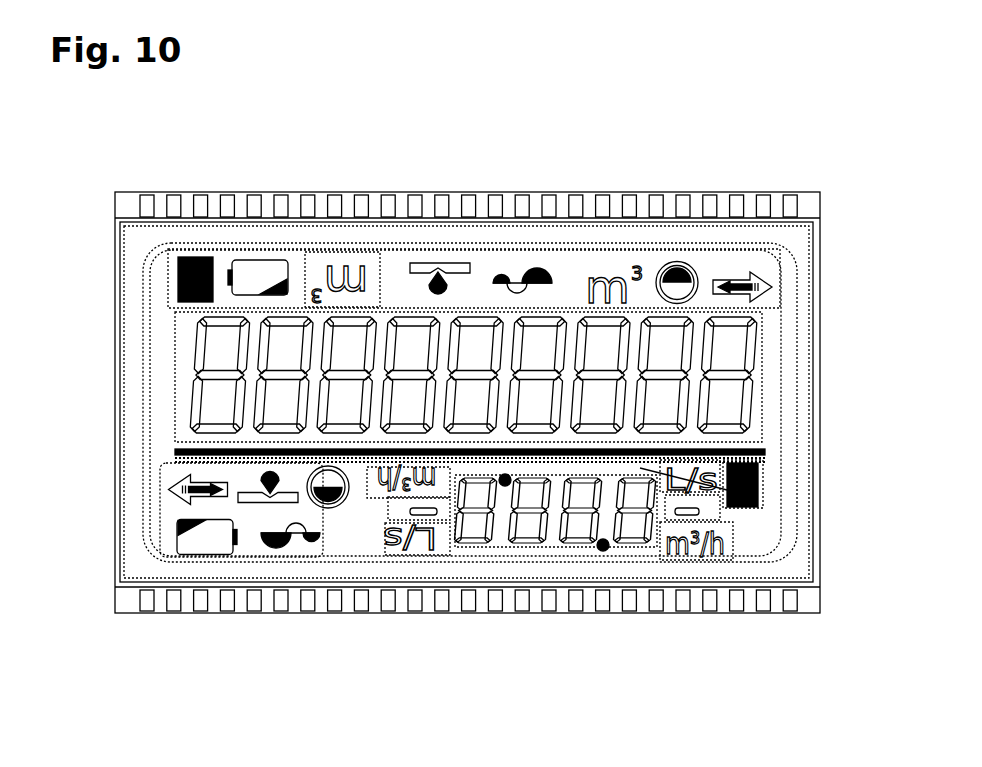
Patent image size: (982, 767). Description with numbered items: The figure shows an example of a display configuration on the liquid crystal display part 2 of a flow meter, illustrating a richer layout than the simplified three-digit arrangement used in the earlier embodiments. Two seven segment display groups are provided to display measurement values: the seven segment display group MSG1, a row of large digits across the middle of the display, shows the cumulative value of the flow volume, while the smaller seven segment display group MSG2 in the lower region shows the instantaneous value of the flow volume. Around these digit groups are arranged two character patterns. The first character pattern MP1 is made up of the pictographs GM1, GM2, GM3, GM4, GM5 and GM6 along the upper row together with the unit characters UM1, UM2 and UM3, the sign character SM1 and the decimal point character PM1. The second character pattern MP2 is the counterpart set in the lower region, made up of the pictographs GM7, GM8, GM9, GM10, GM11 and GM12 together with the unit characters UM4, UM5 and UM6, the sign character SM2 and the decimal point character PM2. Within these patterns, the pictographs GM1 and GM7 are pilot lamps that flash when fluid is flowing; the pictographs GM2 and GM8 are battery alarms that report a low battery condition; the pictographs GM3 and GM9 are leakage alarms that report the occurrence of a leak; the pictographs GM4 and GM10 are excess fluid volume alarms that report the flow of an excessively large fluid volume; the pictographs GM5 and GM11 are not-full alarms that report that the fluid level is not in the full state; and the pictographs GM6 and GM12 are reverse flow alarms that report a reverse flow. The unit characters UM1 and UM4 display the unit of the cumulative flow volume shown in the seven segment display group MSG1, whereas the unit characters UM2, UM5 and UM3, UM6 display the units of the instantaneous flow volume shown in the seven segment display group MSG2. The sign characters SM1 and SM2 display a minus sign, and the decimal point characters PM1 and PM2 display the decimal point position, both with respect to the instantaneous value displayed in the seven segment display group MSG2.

The liquid crystal display part 2 is at (806, 306).
The first character pattern MP1 is at (846, 538).
The second character pattern MP2 is at (562, 543).
The pictograph GM1 is at (119, 267).
The pictograph GM2 is at (273, 211).
The pictograph GM3 is at (430, 272).
The pictograph GM4 is at (540, 276).
The pictograph GM5 is at (687, 265).
The pictograph GM6 is at (753, 280).
The pictograph GM7 is at (763, 490).
The pictograph GM8 is at (137, 526).
The pictograph GM9 is at (257, 465).
The pictograph GM10 is at (288, 555).
The pictograph GM11 is at (307, 487).
The pictograph GM12 is at (129, 475).
The unit character UM1 is at (608, 273).
The unit character UM2 is at (692, 480).
The unit character UM3 is at (715, 553).
The unit character UM4 is at (341, 262).
The unit character UM5 is at (395, 542).
The unit character UM6 is at (396, 470).
The seven segment display group MSG1 is at (392, 375).
The seven segment display group MSG2 is at (565, 545).
The decimal point character PM1 is at (604, 550).
The decimal point character PM2 is at (509, 479).
The sign character SM1 is at (390, 498).
The sign character SM2 is at (700, 509).